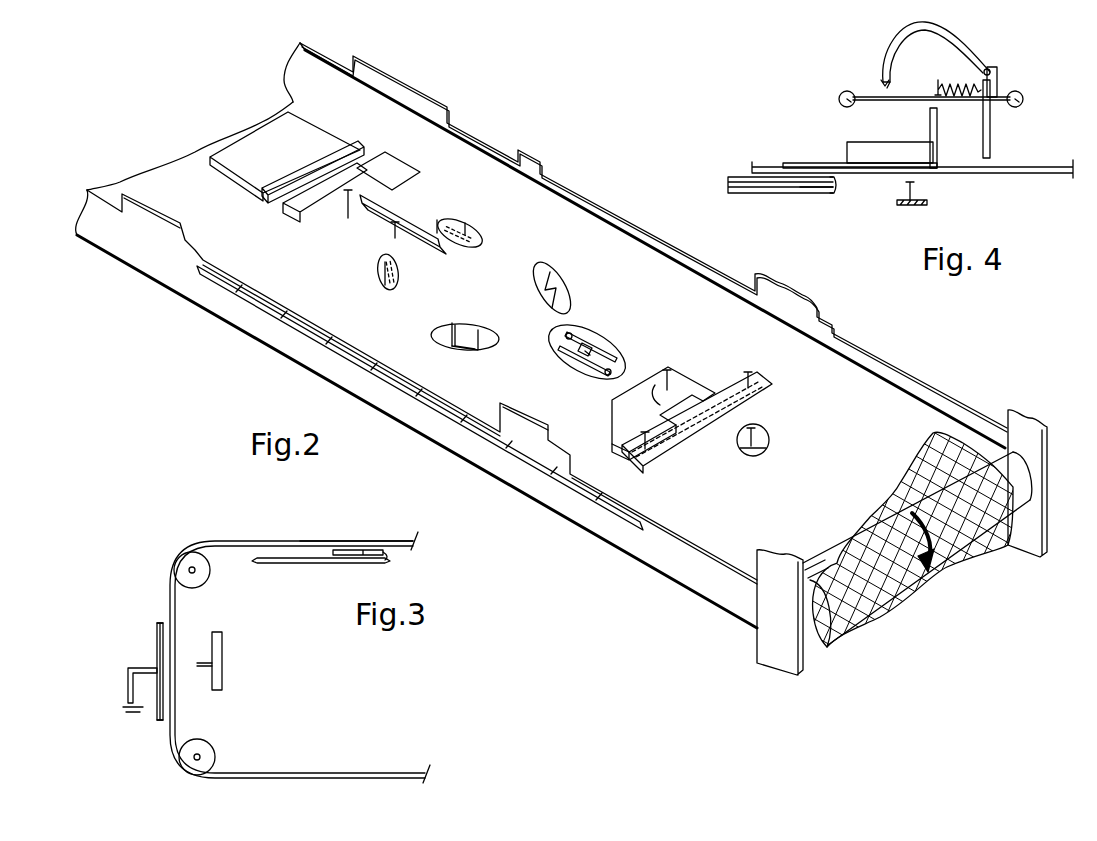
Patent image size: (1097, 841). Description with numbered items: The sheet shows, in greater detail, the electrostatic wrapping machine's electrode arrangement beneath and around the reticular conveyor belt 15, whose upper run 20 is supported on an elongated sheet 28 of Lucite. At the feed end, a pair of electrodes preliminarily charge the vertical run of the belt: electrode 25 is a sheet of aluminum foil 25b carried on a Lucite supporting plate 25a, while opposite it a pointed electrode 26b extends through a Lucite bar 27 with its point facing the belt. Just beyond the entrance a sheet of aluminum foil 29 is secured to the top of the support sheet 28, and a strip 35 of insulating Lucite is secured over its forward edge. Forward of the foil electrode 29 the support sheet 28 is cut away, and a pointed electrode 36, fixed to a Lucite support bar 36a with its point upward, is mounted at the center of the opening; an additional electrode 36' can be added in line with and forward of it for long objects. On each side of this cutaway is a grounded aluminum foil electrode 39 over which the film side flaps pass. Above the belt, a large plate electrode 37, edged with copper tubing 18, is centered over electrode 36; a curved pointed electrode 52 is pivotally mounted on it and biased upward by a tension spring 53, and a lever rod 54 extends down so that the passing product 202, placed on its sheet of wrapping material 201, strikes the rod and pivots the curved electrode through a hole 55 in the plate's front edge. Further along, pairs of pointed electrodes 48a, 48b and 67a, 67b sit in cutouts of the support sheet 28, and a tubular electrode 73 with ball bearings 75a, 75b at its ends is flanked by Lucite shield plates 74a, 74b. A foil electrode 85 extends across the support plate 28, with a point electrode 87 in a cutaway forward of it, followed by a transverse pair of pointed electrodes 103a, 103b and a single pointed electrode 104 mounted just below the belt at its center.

In FIG. 2, the reticular conveyor belt 15 is at (947, 558).
In FIG. 3, the reticular conveyor belt 15 is at (182, 713).
In FIG. 4, the copper tubing 18 is at (839, 96).
In FIG. 2, the upper run of the conveyor 20 is at (917, 457).
In FIG. 3, the upper run of the conveyor 20 is at (287, 544).
In FIG. 4, the upper run of the conveyor 20 is at (1033, 167).
In FIG. 3, the electrode 25 is at (153, 653).
In FIG. 3, the Lucite supporting plate 25a is at (155, 620).
In FIG. 3, the sheet of aluminum foil 25b is at (167, 727).
In FIG. 3, the pointed electrode 26b is at (197, 664).
In FIG. 3, the Lucite bar 27 is at (225, 643).
In FIG. 2, the elongated sheet of Lucite 28 is at (640, 253).
In FIG. 3, the elongated sheet of Lucite 28 is at (348, 563).
In FIG. 4, the elongated sheet of Lucite 28 is at (763, 190).
In FIG. 2, the sheet of aluminum foil 29 is at (260, 133).
In FIG. 3, the sheet of aluminum foil 29 is at (330, 548).
In FIG. 4, the sheet of aluminum foil 29 is at (803, 188).
In FIG. 2, the strip of insulating material 35 is at (350, 147).
In FIG. 3, the strip of insulating material 35 is at (390, 556).
In FIG. 4, the strip of insulating material 35 is at (835, 180).
In FIG. 2, the pointed electrode 36 is at (376, 180).
In FIG. 4, the pointed electrode 36 is at (933, 189).
In FIG. 2, the electrode 36' is at (363, 240).
In FIG. 2, the Lucite support bar 36a is at (385, 220).
In FIG. 4, the Lucite support bar 36a is at (927, 203).
In FIG. 4, the plate electrode 37 is at (867, 93).
In FIG. 2, the aluminum foil electrode 39 is at (300, 227).
In FIG. 2, the pointed electrode 48a is at (437, 222).
In FIG. 2, the pointed electrode 48b is at (476, 214).
In FIG. 4, the curved pointed electrode 52 is at (965, 33).
In FIG. 4, the tension spring 53 is at (960, 80).
In FIG. 4, the lever rod 54 is at (990, 145).
In FIG. 4, the hole 55 is at (888, 96).
In FIG. 2, the pointed electrode 67a is at (465, 308).
In FIG. 2, the pointed electrode 67b is at (478, 330).
In FIG. 2, the tubular electrode 73 is at (613, 358).
In FIG. 2, the Lucite shield plate 74a is at (603, 340).
In FIG. 2, the Lucite shield plate 74b is at (573, 373).
In FIG. 2, the ball bearing 75a is at (570, 327).
In FIG. 2, the ball bearing 75b is at (613, 383).
In FIG. 2, the foil electrode 85 is at (693, 377).
In FIG. 2, the point electrode 87 is at (663, 377).
In FIG. 2, the pointed electrode 103a is at (653, 473).
In FIG. 2, the pointed electrode 103b is at (753, 380).
In FIG. 2, the pointed electrode 104 is at (760, 430).
In FIG. 4, the sheet of wrapping material 201 is at (937, 145).
In FIG. 4, the product 202 is at (847, 147).